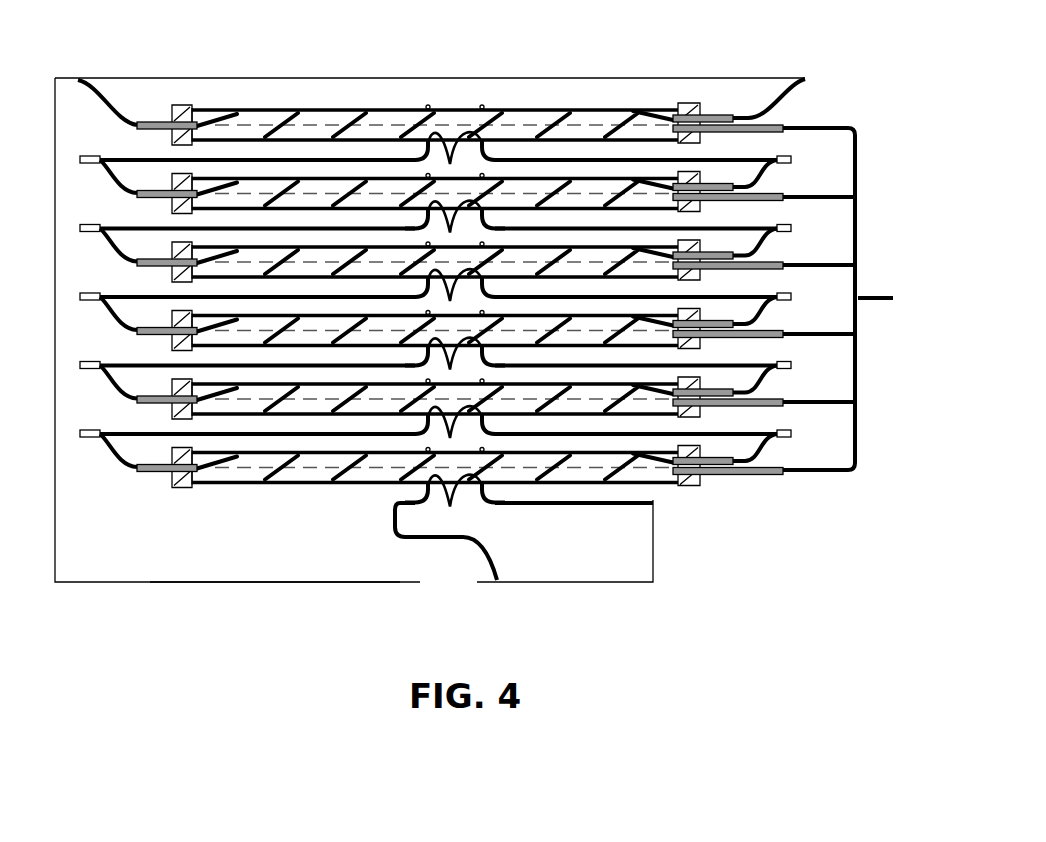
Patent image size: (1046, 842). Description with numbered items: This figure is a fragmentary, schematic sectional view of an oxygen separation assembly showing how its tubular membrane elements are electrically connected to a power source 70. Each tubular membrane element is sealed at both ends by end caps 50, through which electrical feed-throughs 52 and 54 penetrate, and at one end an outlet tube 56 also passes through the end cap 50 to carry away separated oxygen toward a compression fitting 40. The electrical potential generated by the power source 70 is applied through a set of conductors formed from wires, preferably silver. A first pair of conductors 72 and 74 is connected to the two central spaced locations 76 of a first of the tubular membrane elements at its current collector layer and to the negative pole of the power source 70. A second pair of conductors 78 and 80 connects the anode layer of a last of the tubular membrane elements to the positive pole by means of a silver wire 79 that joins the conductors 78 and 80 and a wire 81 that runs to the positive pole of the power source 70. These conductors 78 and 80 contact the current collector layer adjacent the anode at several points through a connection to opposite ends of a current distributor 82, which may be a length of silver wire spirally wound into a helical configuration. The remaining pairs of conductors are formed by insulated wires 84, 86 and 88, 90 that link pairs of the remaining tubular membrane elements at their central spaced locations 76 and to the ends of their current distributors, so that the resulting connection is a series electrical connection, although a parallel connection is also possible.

The compression fitting 40 is at (853, 112).
The end cap 50 is at (712, 160).
The electrical feed-through 52 is at (161, 121).
The electrical feed-through 54 is at (716, 114).
The outlet tube 56 is at (778, 148).
The power source 70 is at (433, 592).
The conductor 72 is at (393, 512).
The conductor 74 is at (565, 505).
The central spaced location 76 is at (455, 328).
The conductor 78 is at (780, 93).
The silver wire 79 is at (521, 77).
The conductor 80 is at (102, 99).
The wire 81 is at (228, 583).
The current distributor 82 is at (551, 121).
The insulated wire 84 is at (93, 184).
The insulated wire 86 is at (151, 158).
The insulated wire 88 is at (760, 179).
The insulated wire 90 is at (760, 158).